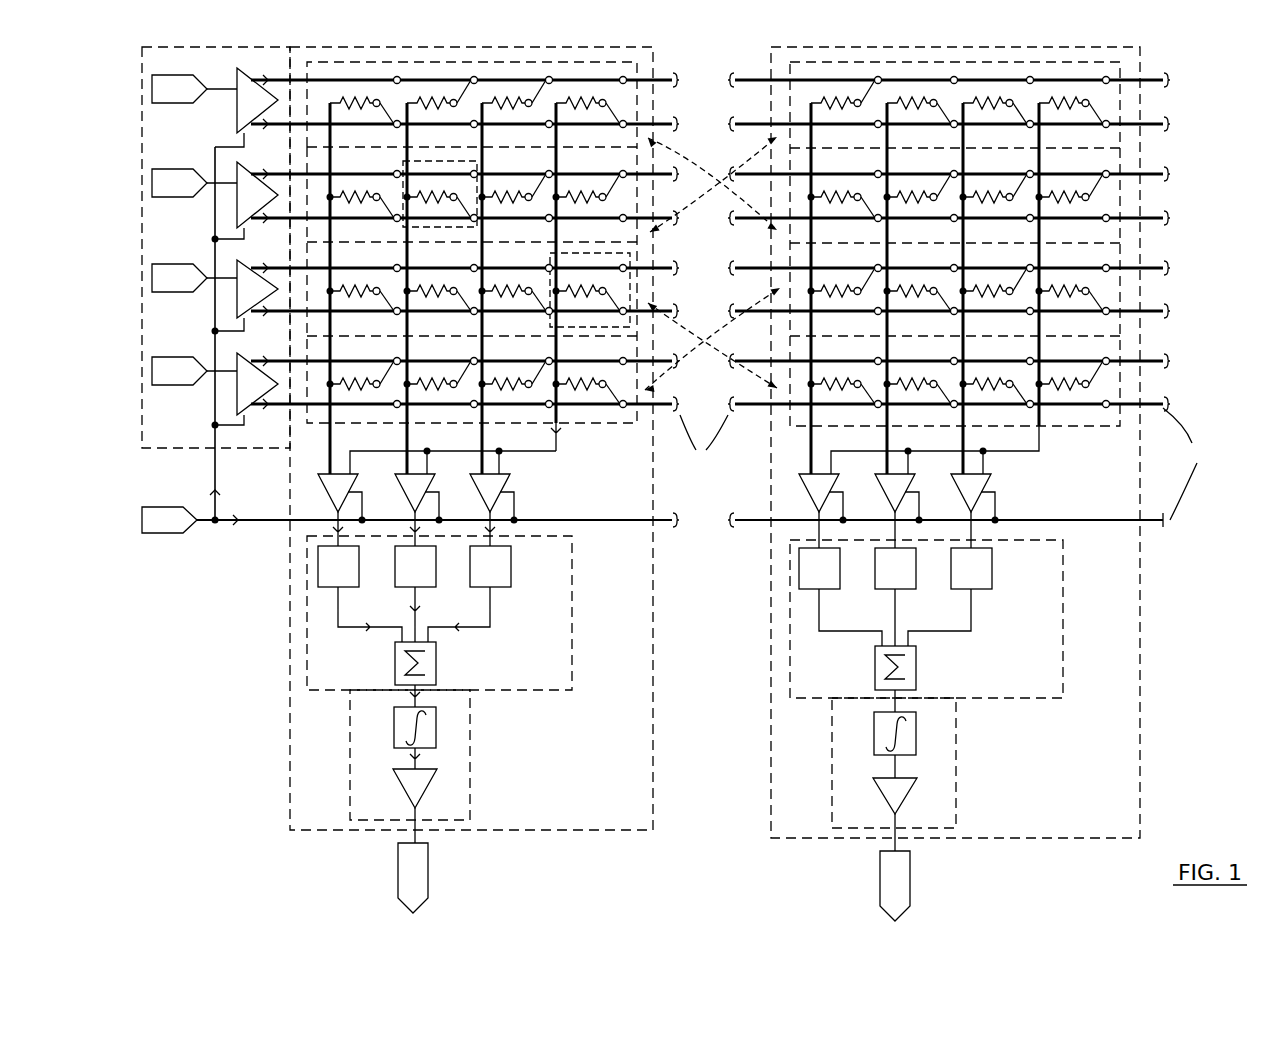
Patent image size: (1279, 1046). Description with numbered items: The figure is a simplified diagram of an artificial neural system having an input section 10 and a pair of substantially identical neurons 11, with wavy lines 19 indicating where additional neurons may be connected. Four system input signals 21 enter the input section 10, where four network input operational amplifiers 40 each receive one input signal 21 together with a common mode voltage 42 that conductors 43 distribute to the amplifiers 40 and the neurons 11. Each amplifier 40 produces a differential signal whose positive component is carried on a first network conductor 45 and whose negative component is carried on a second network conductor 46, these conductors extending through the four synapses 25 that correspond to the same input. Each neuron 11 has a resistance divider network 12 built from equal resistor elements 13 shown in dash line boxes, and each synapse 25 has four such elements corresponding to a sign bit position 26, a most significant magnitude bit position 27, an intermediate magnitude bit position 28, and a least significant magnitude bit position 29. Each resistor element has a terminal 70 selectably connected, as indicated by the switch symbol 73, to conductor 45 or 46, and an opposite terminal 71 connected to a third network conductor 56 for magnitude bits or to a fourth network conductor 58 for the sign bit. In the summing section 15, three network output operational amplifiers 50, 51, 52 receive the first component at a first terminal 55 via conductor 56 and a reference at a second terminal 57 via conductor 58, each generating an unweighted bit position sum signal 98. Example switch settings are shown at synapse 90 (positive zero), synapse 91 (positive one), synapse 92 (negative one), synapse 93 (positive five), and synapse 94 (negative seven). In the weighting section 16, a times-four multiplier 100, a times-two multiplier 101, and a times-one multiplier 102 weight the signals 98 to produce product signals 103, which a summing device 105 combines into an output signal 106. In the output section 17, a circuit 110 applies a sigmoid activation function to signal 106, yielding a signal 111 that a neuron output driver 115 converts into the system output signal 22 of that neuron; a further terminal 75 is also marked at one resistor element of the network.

The input section 10 is at (222, 40).
The neuron 11 is at (770, 46).
The resistance divider network 12 is at (783, 103).
The resistor element 13 is at (573, 244).
The summing section 15 is at (583, 509).
The weighting section 16 is at (1073, 654).
The output section 17 is at (477, 729).
The wavy lines 19 is at (947, 464).
The system input signals 21 is at (190, 104).
The system output signals 22 is at (428, 860).
The synapse 25 is at (712, 263).
The sign bit position 26 is at (618, 41).
The most significant magnitude bit position 27 is at (550, 41).
The intermediate significant magnitude bit position 28 is at (473, 41).
The least significant magnitude bit position 29 is at (386, 41).
The network input operational amplifier 40 is at (266, 178).
The common mode voltage 42 is at (178, 534).
The conductors 43 is at (247, 517).
The first network conductor 45 is at (372, 172).
The second network conductor 46 is at (386, 219).
The network output operational amplifier 50 is at (500, 488).
The network output operational amplifier 51 is at (420, 484).
The network output operational amplifier 52 is at (345, 484).
The first terminal 55 is at (402, 474).
The third network conductor 56 is at (477, 327).
The second terminal 57 is at (493, 474).
The fourth network conductor 58 is at (558, 343).
The terminal 70 is at (456, 192).
The terminal 71 is at (418, 213).
The switch symbol 73 is at (467, 200).
The switch contact 75 is at (416, 228).
The synapse set to 0000 90 is at (689, 262).
The synapse set to 1000 91 is at (1180, 112).
The synapse set to 1001 92 is at (1180, 190).
The synapse set to 1010 93 is at (1180, 272).
The synapse set to 1111 94 is at (1180, 364).
The unweighted bit position sum signal 98 is at (345, 540).
The ×4 factor multiplier 100 is at (511, 583).
The ×2 factor multiplier 101 is at (436, 584).
The ×1 factor multiplier 102 is at (348, 589).
The product signals 103 is at (412, 619).
The summing device 105 is at (437, 657).
The output signal 106 is at (423, 698).
The activation function circuit 110 is at (394, 722).
The signal 111 is at (417, 763).
The neuron output driver 115 is at (413, 780).